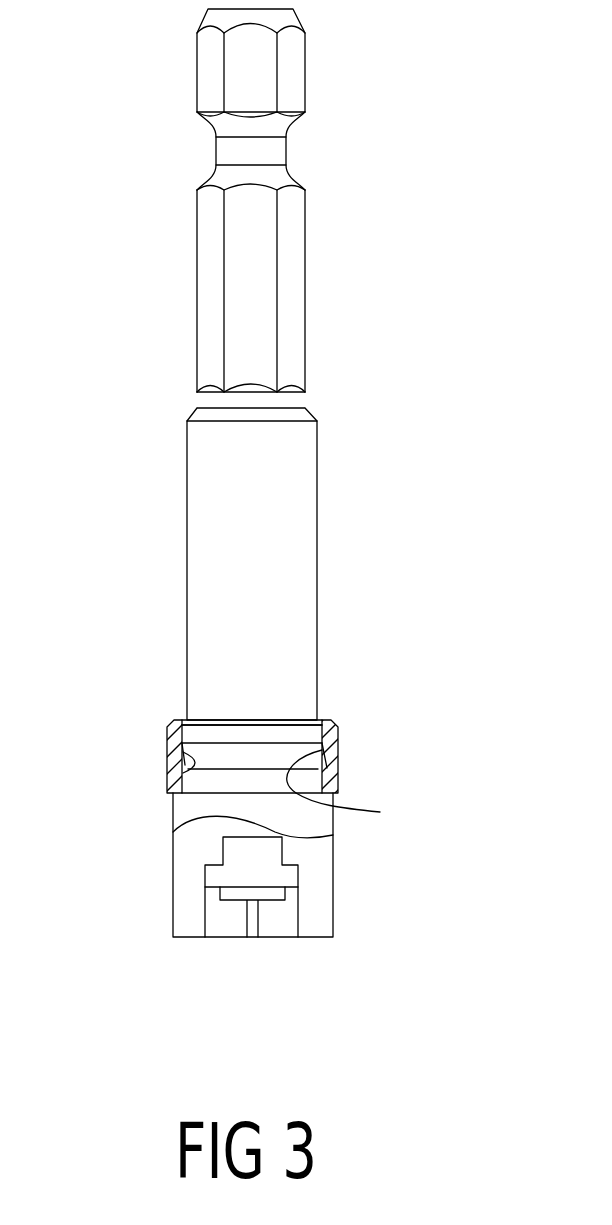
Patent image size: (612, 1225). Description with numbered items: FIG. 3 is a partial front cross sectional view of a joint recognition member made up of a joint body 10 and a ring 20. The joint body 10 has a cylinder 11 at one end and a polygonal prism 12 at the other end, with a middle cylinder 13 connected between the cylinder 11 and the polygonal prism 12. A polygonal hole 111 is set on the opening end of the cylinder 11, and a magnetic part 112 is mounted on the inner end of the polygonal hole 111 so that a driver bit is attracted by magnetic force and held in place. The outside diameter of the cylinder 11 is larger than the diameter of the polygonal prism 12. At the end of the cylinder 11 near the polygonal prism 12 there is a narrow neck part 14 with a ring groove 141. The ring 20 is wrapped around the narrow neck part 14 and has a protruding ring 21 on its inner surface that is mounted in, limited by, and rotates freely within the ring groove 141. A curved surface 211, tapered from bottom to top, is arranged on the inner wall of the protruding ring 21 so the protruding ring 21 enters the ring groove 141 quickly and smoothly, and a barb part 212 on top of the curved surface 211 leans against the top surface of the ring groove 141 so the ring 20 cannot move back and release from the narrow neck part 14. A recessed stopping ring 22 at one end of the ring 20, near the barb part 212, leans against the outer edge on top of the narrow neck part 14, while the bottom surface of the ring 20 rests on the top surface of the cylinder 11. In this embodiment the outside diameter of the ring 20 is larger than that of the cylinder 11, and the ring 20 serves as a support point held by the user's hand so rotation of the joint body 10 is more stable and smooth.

The joint body 10 is at (168, 507).
The cylinder 11 is at (312, 813).
The polygonal prism 12 is at (247, 303).
The middle cylinder 13 is at (270, 516).
The narrow neck part 14 is at (313, 735).
The ring 20 is at (332, 745).
The protruding ring 21 is at (380, 812).
The recessed stopping ring 22 is at (325, 727).
The polygonal hole 111 is at (228, 913).
The magnetic part 112 is at (267, 873).
The ring groove 141 is at (252, 758).
The curved surface 211 is at (188, 768).
The barb part 212 is at (184, 745).